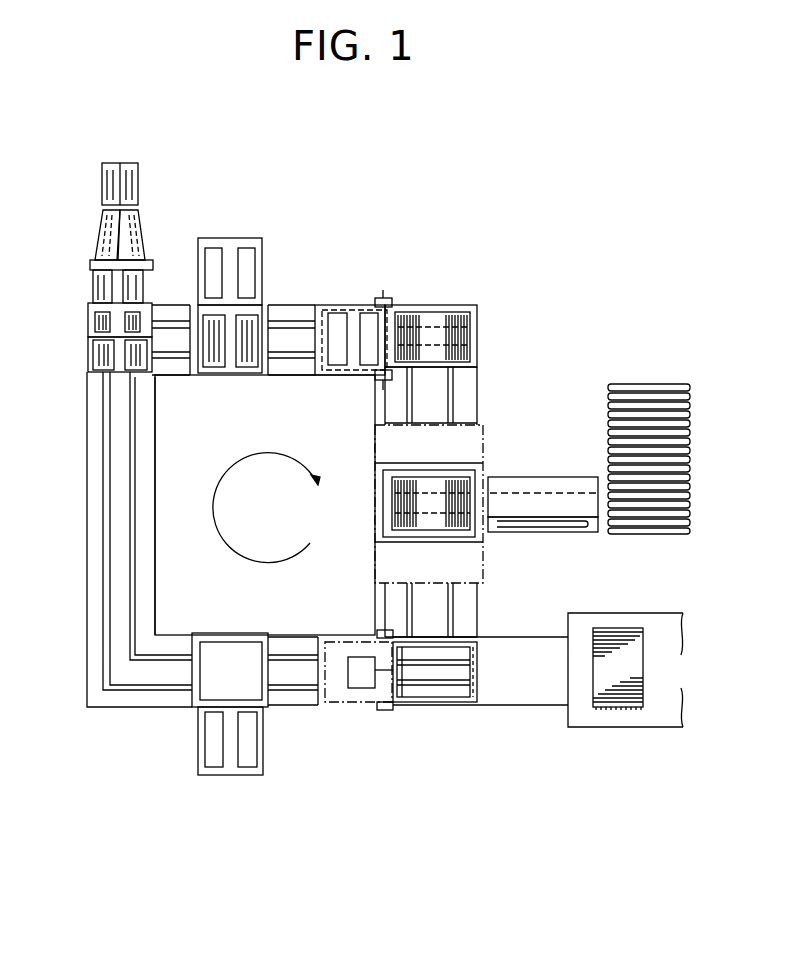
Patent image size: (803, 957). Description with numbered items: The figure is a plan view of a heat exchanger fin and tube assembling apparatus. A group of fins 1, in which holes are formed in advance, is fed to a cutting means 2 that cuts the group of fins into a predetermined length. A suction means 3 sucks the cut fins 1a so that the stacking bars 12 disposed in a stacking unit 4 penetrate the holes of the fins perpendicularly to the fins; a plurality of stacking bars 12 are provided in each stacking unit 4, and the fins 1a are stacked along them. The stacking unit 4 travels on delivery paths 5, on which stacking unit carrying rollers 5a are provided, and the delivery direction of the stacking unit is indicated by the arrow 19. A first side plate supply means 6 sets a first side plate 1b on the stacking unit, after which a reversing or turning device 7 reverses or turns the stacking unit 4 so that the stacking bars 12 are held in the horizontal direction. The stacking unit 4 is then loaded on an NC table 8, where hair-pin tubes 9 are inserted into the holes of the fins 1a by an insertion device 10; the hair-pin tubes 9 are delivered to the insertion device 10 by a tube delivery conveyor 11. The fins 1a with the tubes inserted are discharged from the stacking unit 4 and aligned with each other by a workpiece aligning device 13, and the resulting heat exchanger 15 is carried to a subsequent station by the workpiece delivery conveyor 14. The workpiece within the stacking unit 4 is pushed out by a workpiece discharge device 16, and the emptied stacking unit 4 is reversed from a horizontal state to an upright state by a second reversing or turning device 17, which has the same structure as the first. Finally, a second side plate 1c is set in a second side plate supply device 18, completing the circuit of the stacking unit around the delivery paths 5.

The group of fins 1 is at (102, 183).
The fins 1a is at (90, 360).
The first side plate 1b is at (210, 248).
The second side plate 1c is at (200, 742).
The cutting means 2 is at (90, 265).
The suction means 3 is at (90, 308).
The stacking unit 4 is at (92, 347).
The delivery paths 5 is at (87, 485).
The stacking unit carrying rollers 5a is at (173, 320).
The first side plate supply means 6 is at (248, 238).
The reversing or turning device 7 is at (380, 300).
The NC table 8 is at (480, 425).
The hair-pin tubes 9 is at (480, 490).
The insertion device 10 is at (583, 477).
The tube delivery conveyor 11 is at (609, 388).
The stacking bars 12 is at (470, 323).
The workpiece aligning device 13 is at (490, 705).
The workpiece delivery conveyor 14 is at (656, 613).
The heat exchanger 15 is at (645, 690).
The workpiece discharge device 16 is at (348, 680).
The reversing or turning device 17 is at (385, 710).
The second side plate supply device 18 is at (232, 775).
The delivery direction of the stacking unit 19 is at (290, 452).